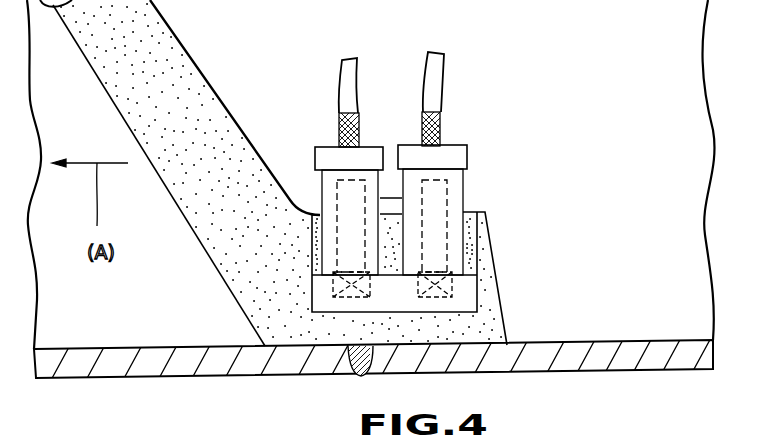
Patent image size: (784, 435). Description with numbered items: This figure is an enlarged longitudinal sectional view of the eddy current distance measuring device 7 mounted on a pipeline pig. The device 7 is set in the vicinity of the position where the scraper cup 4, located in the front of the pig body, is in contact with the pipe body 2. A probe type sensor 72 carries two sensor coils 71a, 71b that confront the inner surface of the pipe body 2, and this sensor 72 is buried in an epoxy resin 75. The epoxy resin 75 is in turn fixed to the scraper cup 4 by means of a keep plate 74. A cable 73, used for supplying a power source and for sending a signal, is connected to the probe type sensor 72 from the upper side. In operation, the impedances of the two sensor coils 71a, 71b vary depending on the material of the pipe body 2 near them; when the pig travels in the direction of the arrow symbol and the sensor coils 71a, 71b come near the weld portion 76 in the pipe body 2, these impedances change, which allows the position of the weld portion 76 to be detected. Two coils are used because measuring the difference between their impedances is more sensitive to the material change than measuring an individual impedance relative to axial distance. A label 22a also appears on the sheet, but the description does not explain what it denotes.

The pipe body 2 is at (548, 357).
The scraper cup 4 is at (178, 200).
The eddy current distance measuring device 7 is at (486, 177).
The sensor coil 71a is at (455, 285).
The sensor coil 71b is at (333, 287).
The probe type sensor 72 is at (466, 158).
The cable 73 is at (438, 100).
The keep plate 74 is at (393, 197).
The epoxy resin 75 is at (474, 240).
The weld portion 76 is at (365, 375).
The mounting portion 22a is at (264, 427).